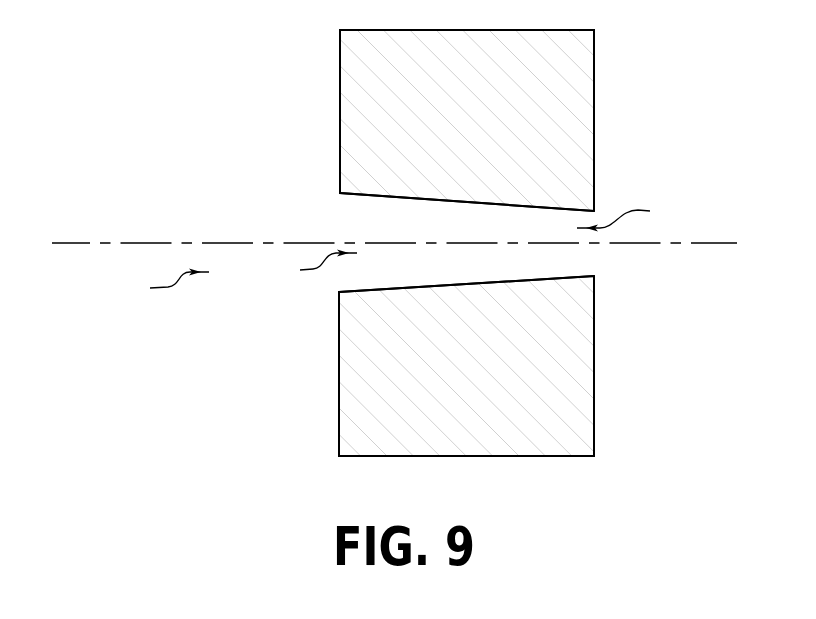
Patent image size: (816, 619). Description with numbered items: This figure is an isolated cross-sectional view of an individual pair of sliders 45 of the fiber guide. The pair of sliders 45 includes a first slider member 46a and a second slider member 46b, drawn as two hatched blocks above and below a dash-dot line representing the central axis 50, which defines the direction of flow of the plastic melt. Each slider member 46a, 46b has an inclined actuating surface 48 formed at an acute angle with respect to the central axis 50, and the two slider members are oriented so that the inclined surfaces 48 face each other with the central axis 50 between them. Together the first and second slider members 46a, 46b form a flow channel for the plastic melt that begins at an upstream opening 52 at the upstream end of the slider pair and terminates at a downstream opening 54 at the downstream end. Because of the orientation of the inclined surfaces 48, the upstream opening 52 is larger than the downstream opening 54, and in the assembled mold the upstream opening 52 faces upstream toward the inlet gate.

The pair of sliders 45 is at (161, 284).
The first slider member 46a is at (583, 109).
The second slider member 46b is at (585, 373).
The inclined actuating surface 48 is at (352, 197).
The central axis 50 is at (66, 243).
The upstream opening 52 is at (309, 266).
The downstream opening 54 is at (631, 212).